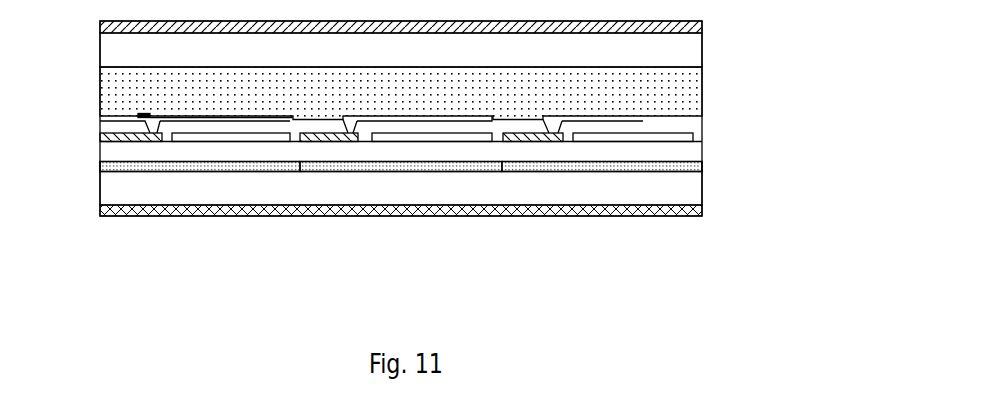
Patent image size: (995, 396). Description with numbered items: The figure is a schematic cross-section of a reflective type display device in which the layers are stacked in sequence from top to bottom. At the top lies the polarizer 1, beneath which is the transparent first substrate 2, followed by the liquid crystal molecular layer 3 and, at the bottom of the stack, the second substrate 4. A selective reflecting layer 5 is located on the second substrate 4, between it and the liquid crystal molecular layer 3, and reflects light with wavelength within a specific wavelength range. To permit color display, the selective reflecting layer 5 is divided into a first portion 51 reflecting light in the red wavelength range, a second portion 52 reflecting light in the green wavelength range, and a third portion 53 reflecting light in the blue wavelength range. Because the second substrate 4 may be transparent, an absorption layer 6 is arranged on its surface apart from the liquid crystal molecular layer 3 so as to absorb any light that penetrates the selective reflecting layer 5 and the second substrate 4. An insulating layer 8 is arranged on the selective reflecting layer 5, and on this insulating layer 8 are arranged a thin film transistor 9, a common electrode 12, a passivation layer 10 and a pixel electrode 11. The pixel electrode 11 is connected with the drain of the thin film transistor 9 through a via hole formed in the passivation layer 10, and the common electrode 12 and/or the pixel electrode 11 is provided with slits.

The polarizer 1 is at (675, 25).
The first substrate 2 is at (668, 52).
The liquid crystal molecular layer 3 is at (668, 92).
The second substrate 4 is at (668, 187).
The selective reflecting layer 5 is at (318, 278).
The first portion 51 is at (275, 168).
The second portion 52 is at (410, 168).
The third portion 53 is at (517, 168).
The absorption layer 6 is at (675, 210).
The insulating layer 8 is at (668, 154).
The thin film transistor 9 is at (108, 137).
The passivation layer 10 is at (667, 127).
The pixel electrode 11 is at (138, 118).
The common electrode 12 is at (201, 137).